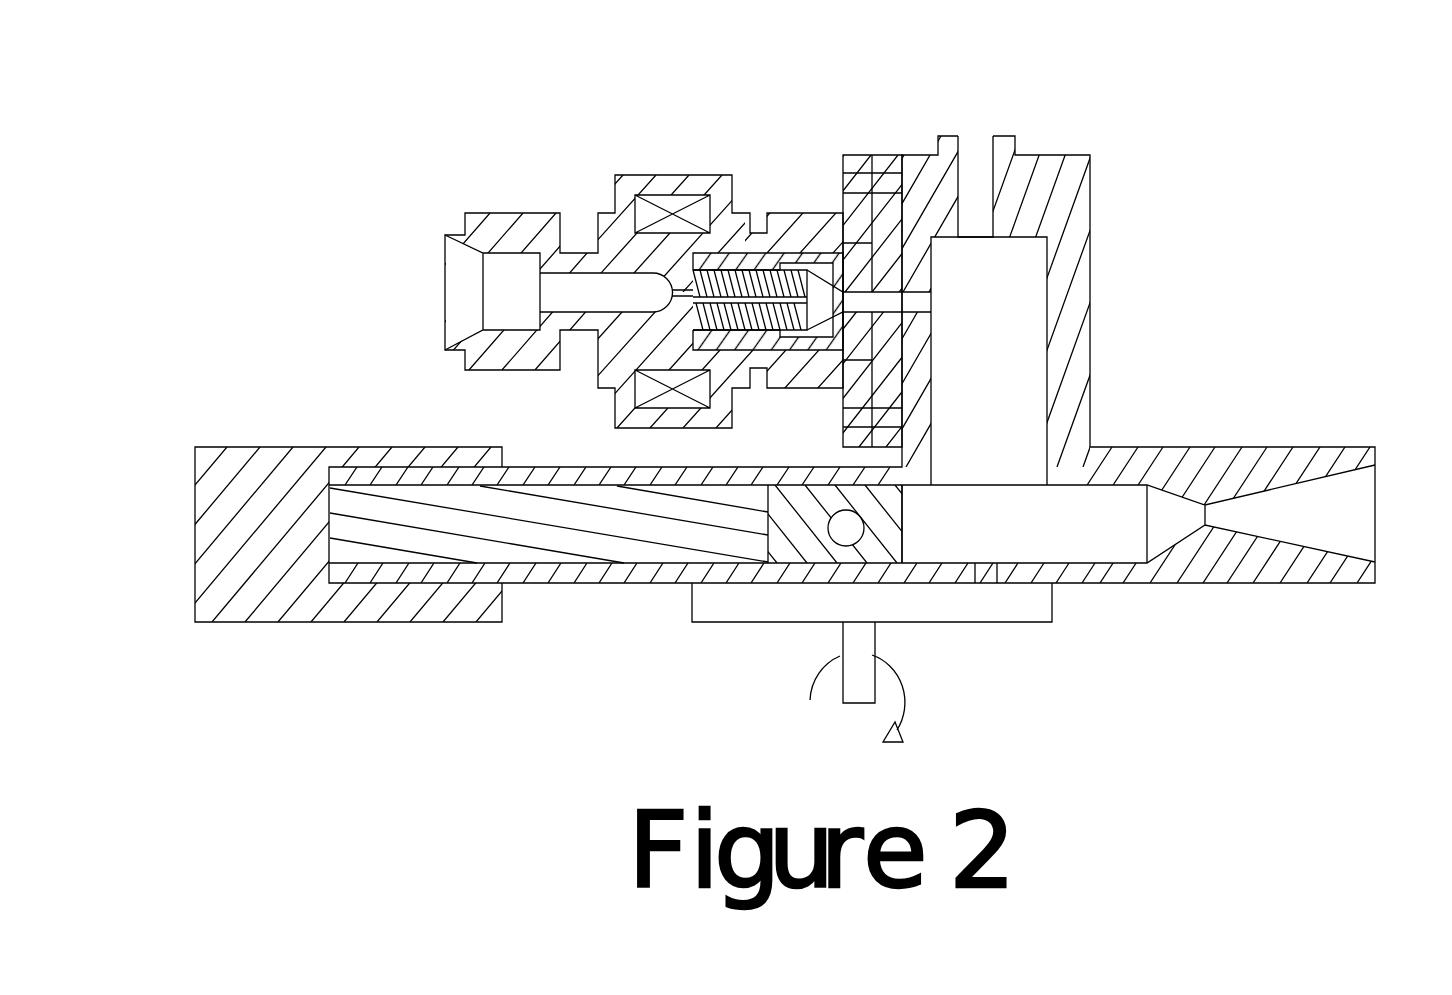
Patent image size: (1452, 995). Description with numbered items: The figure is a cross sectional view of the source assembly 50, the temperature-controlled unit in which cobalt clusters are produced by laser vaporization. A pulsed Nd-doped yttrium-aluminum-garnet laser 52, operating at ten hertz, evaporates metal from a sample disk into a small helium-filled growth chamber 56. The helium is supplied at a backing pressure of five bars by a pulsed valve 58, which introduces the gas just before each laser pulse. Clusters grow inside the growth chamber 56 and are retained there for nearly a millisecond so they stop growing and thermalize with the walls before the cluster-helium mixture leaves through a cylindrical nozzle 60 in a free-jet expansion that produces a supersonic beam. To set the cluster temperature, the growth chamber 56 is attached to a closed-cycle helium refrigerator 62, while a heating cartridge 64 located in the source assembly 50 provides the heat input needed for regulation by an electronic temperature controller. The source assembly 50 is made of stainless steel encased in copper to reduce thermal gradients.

The source assembly 50 is at (1218, 667).
The laser 52 is at (985, 137).
The growth chamber 56 is at (970, 527).
The pulsed valve 58 is at (602, 147).
The nozzle 60 is at (1225, 447).
The closed-cycle helium refrigerator 62 is at (430, 623).
The heating cartridge 64 is at (830, 527).